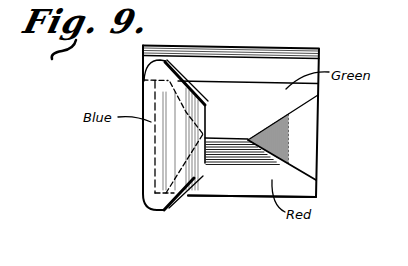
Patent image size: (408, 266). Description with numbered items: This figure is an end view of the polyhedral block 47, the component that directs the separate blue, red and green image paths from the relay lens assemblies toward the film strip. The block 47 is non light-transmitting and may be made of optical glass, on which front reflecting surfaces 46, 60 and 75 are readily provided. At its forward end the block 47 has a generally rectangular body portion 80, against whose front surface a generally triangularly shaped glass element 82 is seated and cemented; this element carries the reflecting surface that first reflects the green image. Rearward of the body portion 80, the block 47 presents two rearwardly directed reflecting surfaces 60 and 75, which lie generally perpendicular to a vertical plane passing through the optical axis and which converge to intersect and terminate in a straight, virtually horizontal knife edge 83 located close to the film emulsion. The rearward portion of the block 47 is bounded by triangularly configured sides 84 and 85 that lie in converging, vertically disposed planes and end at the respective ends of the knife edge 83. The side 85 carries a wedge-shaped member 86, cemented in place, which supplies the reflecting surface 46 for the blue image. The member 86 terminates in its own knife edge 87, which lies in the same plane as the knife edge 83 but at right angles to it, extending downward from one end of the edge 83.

The front reflecting surface 46 is at (150, 145).
The polyhedral block 47 is at (322, 56).
The rearwardly directed reflecting surface 60 is at (246, 177).
The rearwardly directed reflecting surface 75 is at (272, 107).
The forward rectangular body portion 80 is at (262, 83).
The triangularly shaped element 82 is at (229, 47).
The knife edge 83 is at (247, 134).
The triangularly configured side 84 is at (300, 141).
The triangularly configured side 85 is at (158, 105).
The wedge-shaped member 86 is at (149, 175).
The knife edge 87 is at (205, 163).